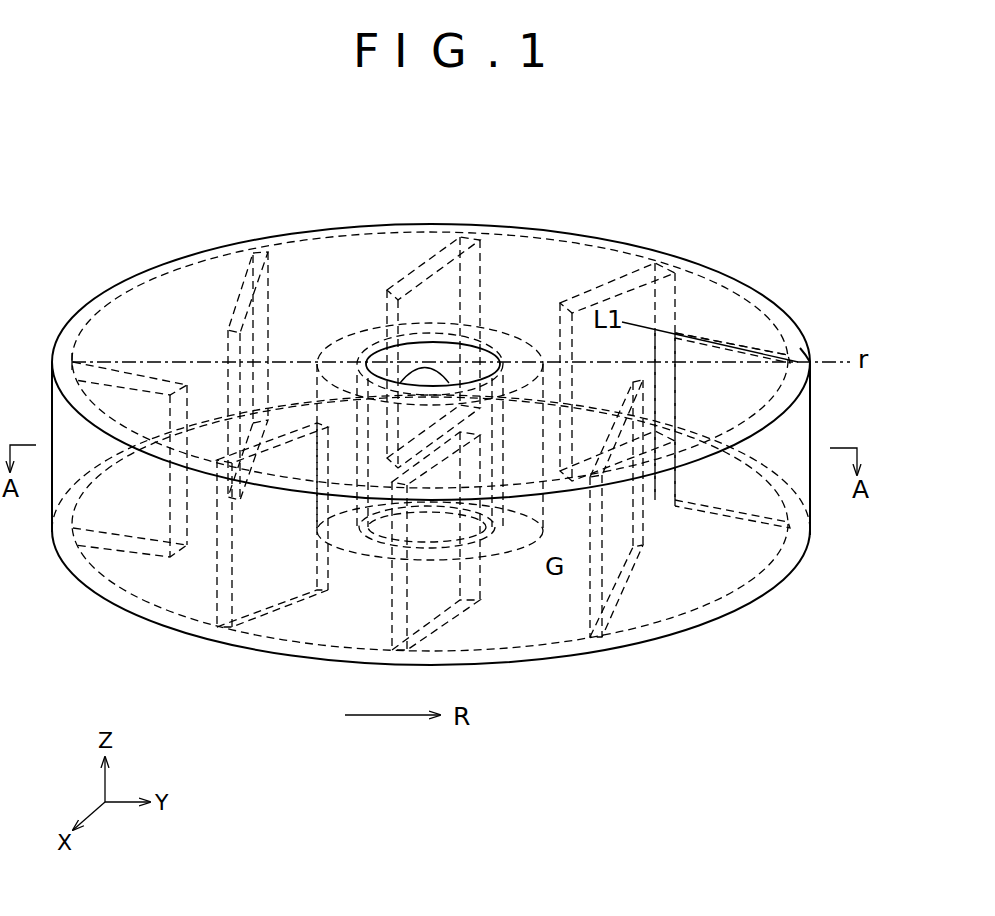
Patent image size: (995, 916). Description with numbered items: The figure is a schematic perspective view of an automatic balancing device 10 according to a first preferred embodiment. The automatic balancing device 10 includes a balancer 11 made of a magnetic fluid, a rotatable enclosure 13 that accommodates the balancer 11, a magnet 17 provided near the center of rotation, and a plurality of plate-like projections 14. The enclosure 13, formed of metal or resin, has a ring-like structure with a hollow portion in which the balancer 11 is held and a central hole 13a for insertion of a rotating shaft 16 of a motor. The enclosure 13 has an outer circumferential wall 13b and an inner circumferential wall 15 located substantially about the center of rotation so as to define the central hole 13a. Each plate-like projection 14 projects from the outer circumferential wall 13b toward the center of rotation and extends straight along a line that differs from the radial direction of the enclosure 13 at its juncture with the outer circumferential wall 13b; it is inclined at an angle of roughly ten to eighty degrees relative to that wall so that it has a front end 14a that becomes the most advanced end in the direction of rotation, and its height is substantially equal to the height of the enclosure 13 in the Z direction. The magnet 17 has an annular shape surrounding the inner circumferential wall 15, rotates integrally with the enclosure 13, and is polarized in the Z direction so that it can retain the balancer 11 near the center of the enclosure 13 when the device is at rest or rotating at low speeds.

The automatic balancing device 10 is at (431, 209).
The balancer 11 is at (345, 612).
The enclosure 13 is at (657, 248).
The central hole 13a is at (443, 553).
The outer circumferential wall 13b is at (800, 352).
The plate-like projection 14 is at (747, 347).
The front end 14a is at (700, 335).
The inner circumferential wall 15 is at (457, 382).
The rotating shaft 16 is at (412, 353).
The magnet 17 is at (500, 343).